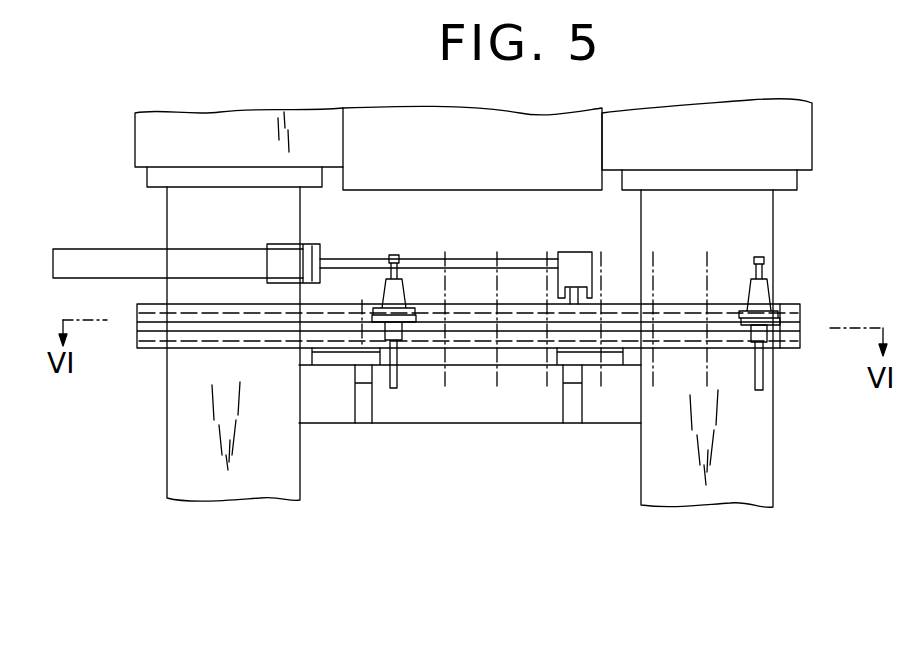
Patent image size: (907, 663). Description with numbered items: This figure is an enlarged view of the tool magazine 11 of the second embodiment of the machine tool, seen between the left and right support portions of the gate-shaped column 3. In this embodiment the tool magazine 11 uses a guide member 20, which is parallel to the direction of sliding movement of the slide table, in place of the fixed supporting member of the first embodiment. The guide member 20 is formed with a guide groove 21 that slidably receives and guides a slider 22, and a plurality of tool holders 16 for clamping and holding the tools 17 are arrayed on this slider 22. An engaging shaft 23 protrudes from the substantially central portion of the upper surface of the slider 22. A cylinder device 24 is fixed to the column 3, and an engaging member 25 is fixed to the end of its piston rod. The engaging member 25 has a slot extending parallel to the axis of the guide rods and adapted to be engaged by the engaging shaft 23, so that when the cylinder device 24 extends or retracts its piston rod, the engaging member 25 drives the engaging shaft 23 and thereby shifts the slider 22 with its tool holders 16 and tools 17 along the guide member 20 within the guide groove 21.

The gate-shaped column 3 is at (765, 222).
The tool magazine 11 is at (487, 399).
The tool holder 16 is at (777, 325).
The tool 17 is at (758, 290).
The guide member 20 is at (797, 307).
The guide groove 21 is at (197, 328).
The slider 22 is at (362, 320).
The engaging shaft 23 is at (582, 292).
The cylinder device 24 is at (96, 255).
The engaging member 25 is at (568, 260).